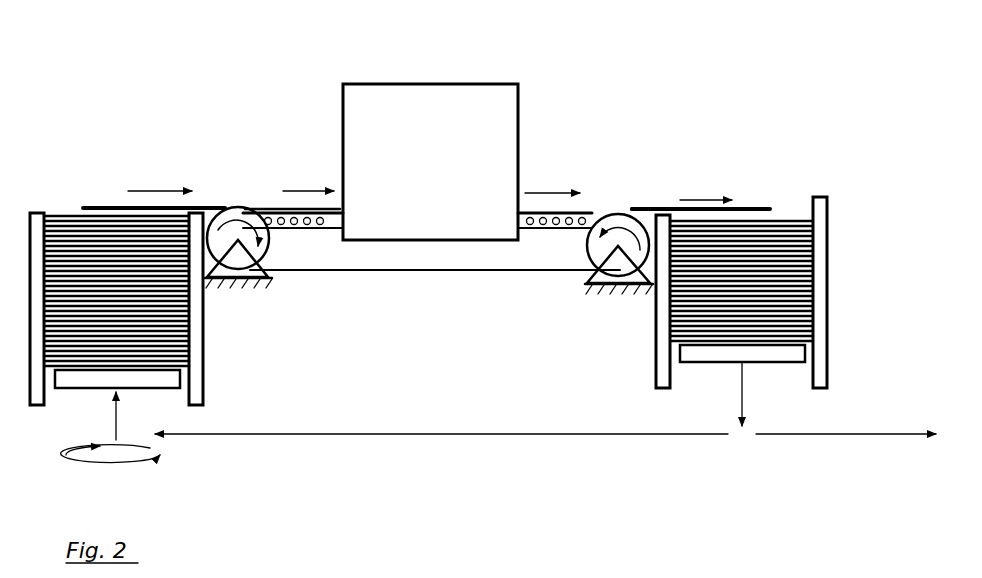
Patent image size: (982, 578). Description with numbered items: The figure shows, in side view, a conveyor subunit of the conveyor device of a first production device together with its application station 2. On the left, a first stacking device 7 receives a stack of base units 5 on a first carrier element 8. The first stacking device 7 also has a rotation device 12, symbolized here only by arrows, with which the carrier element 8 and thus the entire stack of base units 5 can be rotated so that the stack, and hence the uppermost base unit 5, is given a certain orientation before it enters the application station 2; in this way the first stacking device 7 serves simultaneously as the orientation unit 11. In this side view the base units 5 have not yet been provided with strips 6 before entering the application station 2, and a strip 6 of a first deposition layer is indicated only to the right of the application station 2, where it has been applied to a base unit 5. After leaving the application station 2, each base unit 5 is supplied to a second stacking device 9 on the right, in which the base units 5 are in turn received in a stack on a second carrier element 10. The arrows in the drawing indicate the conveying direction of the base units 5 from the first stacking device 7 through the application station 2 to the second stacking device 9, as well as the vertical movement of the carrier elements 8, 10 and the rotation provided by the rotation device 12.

The application station 2 is at (450, 103).
The base unit 5 is at (200, 208).
The strip 6 is at (660, 207).
The first stacking device 7 is at (220, 352).
The first carrier element 8 is at (160, 386).
The second stacking device 9 is at (645, 350).
The second carrier element 10 is at (770, 360).
The orientation unit 11 is at (103, 197).
The rotation device 12 is at (162, 478).